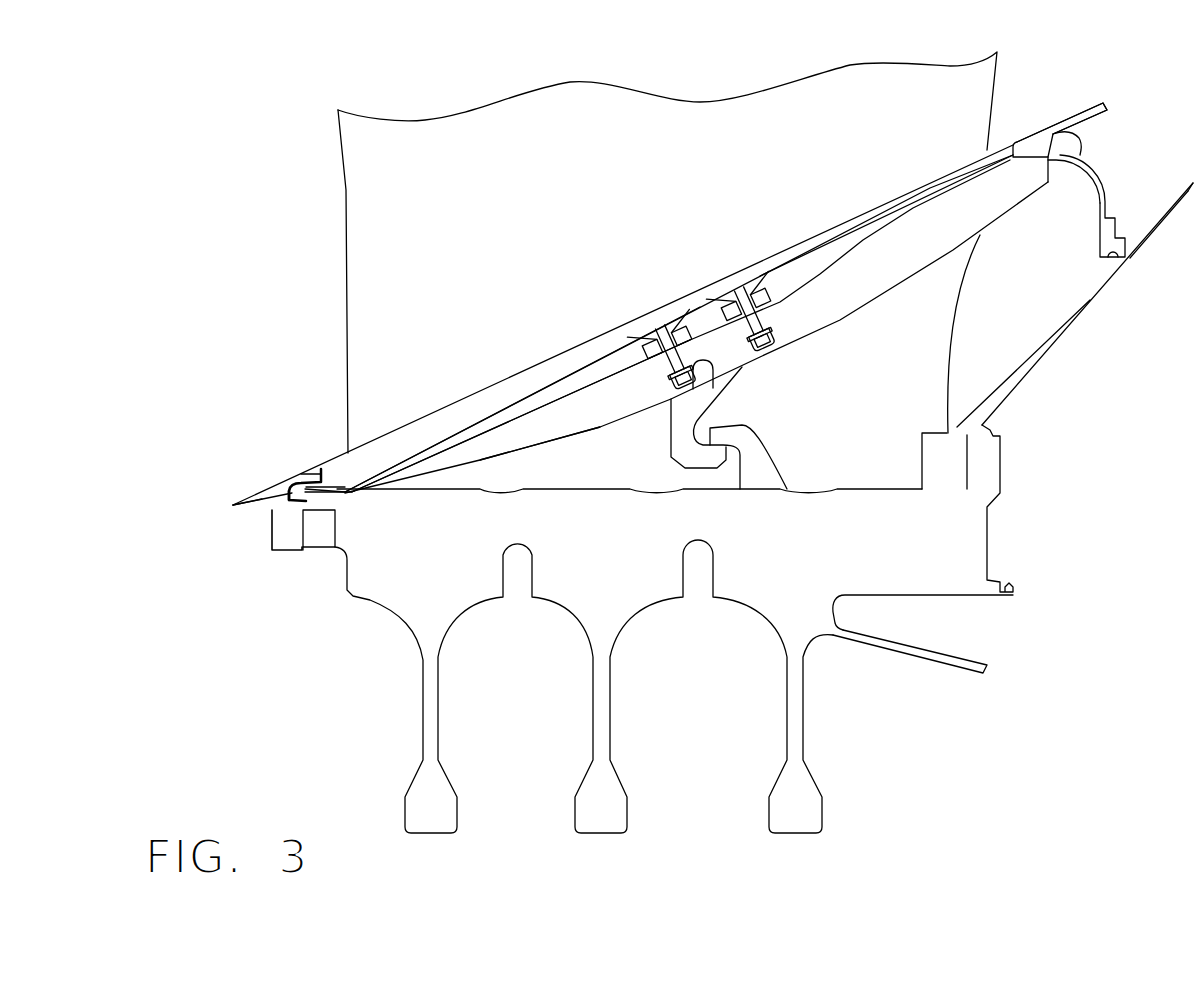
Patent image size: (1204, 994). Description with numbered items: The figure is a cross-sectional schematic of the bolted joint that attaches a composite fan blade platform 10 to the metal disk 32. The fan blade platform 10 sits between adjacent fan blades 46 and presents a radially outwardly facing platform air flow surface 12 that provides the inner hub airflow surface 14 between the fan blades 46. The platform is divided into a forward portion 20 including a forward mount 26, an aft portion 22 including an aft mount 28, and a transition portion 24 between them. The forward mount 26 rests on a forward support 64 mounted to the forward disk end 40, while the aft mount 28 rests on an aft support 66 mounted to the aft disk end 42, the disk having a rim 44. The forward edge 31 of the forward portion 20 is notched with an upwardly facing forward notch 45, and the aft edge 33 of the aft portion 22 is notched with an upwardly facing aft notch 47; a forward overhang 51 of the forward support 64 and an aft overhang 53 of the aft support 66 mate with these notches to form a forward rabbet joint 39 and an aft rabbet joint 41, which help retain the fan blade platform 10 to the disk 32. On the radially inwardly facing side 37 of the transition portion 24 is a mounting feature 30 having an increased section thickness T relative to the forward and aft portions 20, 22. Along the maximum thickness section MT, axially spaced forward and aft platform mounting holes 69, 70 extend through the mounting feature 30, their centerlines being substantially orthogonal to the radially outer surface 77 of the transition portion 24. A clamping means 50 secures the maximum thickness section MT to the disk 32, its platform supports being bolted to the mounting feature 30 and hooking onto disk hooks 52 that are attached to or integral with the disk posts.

The fan blade platform 10 is at (1004, 135).
The platform air flow surface 12 is at (490, 388).
The inner hub airflow surface 14 is at (543, 358).
The forward portion 20 is at (357, 449).
The aft portion 22 is at (912, 197).
The transition portion 24 is at (690, 290).
The forward mount 26 is at (308, 475).
The aft mount 28 is at (1090, 157).
The mounting feature 30 is at (744, 368).
The forward edge 31 is at (313, 496).
The disk 32 is at (633, 620).
The aft edge 33 is at (1022, 168).
The radially inwardly facing side 37 is at (557, 395).
The forward rabbet joint 39 is at (286, 504).
The forward disk end 40 is at (283, 527).
The aft rabbet joint 41 is at (1057, 178).
The aft disk end 42 is at (962, 322).
The rim 44 is at (873, 488).
The forward notch 45 is at (289, 477).
The fan blades 46 is at (346, 250).
The aft notch 47 is at (1066, 136).
The clamping means 50 is at (721, 469).
The forward overhang 51 is at (317, 468).
The disk hooks 52 is at (756, 447).
The aft overhang 53 is at (1033, 135).
The forward support 64 is at (262, 497).
The aft support 66 is at (1082, 112).
The forward platform mounting hole 69 is at (640, 353).
The aft platform mounting hole 70 is at (750, 310).
The radially outer surface 77 is at (607, 355).
The maximum thickness section MT is at (733, 362).
The increased section thickness T is at (820, 267).